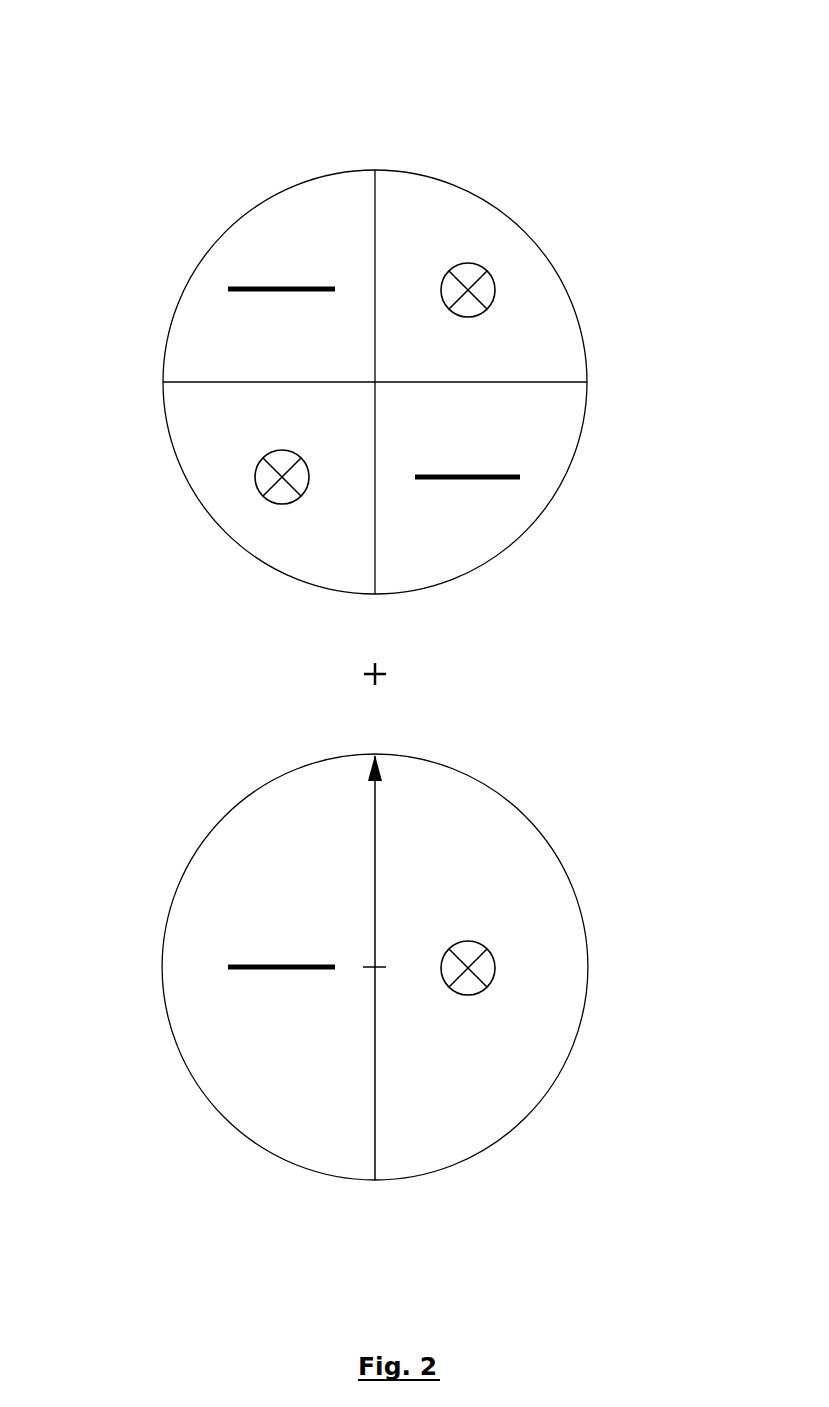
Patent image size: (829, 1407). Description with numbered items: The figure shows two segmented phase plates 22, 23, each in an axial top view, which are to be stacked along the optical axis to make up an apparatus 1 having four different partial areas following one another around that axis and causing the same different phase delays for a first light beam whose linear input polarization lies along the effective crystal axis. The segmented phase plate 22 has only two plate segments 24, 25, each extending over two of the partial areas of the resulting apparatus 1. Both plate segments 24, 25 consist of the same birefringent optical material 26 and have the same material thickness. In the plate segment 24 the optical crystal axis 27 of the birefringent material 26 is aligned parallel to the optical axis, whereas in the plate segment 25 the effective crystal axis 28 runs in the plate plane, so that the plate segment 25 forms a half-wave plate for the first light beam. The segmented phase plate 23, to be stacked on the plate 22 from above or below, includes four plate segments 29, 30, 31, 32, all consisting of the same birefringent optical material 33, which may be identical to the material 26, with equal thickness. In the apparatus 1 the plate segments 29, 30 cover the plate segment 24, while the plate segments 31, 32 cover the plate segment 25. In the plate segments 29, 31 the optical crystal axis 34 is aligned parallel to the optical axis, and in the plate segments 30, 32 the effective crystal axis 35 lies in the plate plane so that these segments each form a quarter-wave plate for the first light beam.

The apparatus 1 is at (590, 140).
The segmented phase plate 22 is at (555, 841).
The segmented phase plate 23 is at (560, 251).
The plate segment 24 is at (584, 902).
The plate segment 25 is at (195, 840).
The birefringent optical material 26 is at (402, 966).
The optical crystal axis 27 is at (500, 972).
The effective crystal axis 28 is at (275, 973).
The plate segment 29 is at (585, 313).
The plate segment 30 is at (560, 514).
The plate segment 31 is at (190, 515).
The plate segment 32 is at (190, 256).
The birefringent optical material 33 is at (399, 385).
The optical crystal axis 34 is at (472, 258).
The effective crystal axis 35 is at (277, 285).